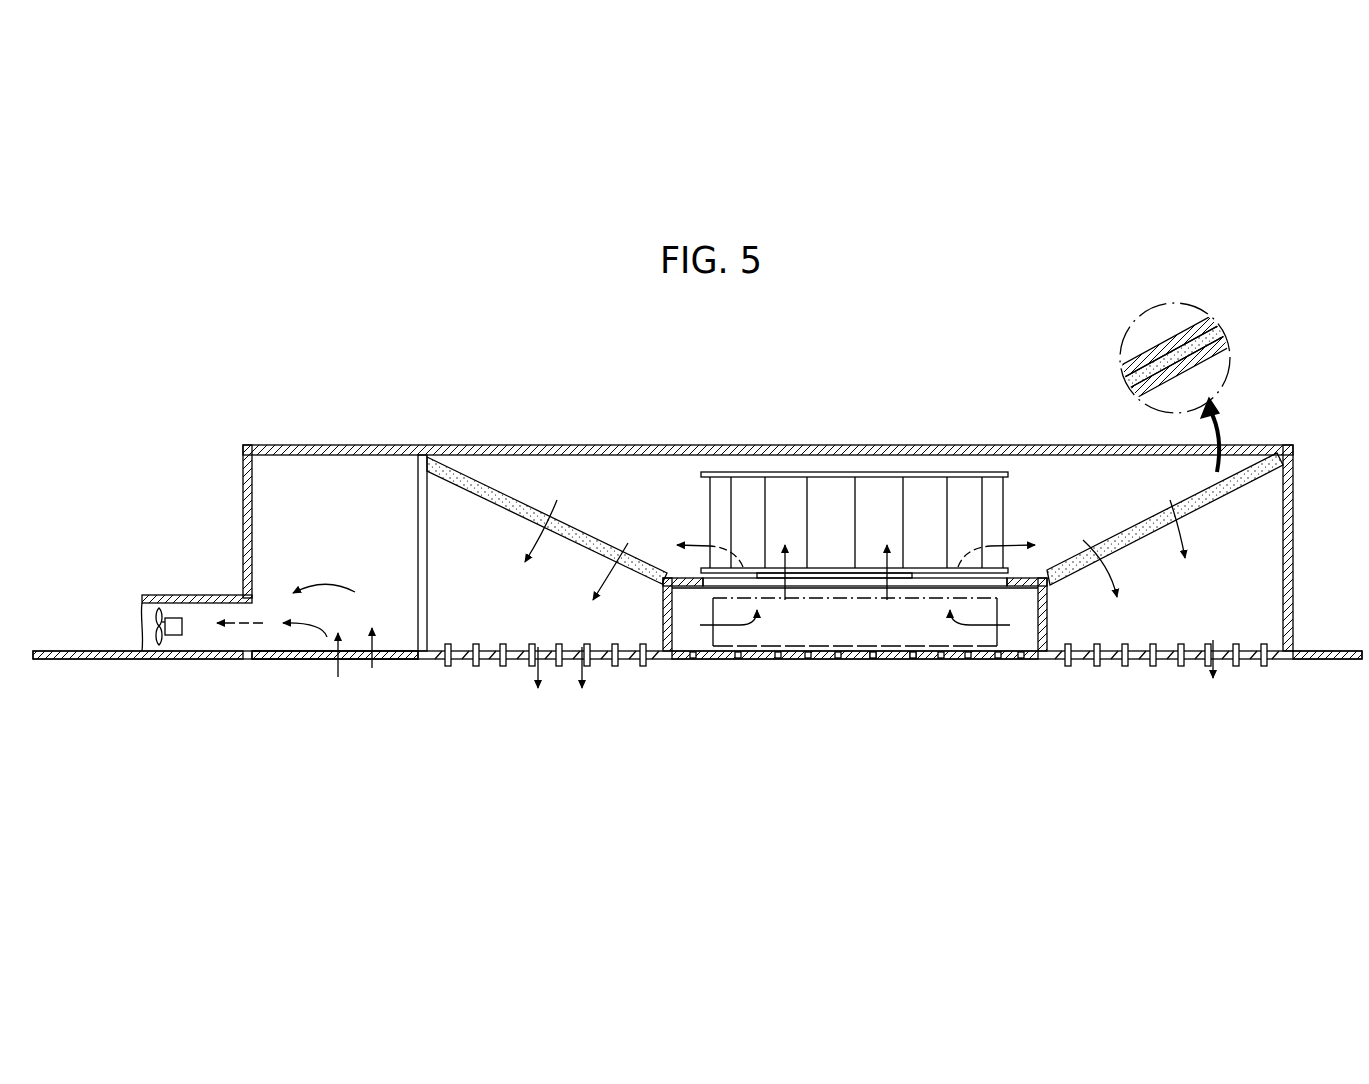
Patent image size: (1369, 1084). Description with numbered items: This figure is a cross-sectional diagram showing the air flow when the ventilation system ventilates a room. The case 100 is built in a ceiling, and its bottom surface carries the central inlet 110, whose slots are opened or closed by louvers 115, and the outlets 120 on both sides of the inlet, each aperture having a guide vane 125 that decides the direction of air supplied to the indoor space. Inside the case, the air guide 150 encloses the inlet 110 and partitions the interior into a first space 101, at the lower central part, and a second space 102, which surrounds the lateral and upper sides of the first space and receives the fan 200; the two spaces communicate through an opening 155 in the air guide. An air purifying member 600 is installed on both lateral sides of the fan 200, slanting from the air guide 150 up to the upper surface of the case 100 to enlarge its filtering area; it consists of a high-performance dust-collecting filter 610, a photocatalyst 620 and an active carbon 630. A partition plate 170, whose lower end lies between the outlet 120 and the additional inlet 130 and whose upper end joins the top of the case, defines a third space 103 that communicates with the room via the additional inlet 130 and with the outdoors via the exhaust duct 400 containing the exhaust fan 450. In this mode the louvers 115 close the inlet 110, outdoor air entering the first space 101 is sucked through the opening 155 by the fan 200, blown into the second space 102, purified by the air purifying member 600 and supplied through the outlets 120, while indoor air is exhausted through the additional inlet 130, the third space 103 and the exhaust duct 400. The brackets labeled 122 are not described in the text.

The case 100 is at (1282, 445).
The first space 101 is at (1030, 622).
The second space 102 is at (645, 515).
The third space 103 is at (358, 533).
The inlet 110 is at (992, 648).
The louver 115 is at (905, 660).
The outlet 120 is at (509, 662).
The left bracket 122 is at (452, 647).
The guide vane 125 is at (1070, 647).
The additional inlet 130 is at (392, 650).
The air guide 150 is at (1043, 578).
The opening 155 is at (708, 580).
The partition plate 170 is at (420, 493).
The fan 200 is at (937, 568).
The exhaust duct 400 is at (160, 597).
The exhaust fan 450 is at (175, 636).
The air purifying member 600 is at (503, 492).
The high-performance dust-collecting filter 610 is at (1198, 313).
The photocatalyst 620 is at (1216, 331).
The active carbon 630 is at (1228, 348).